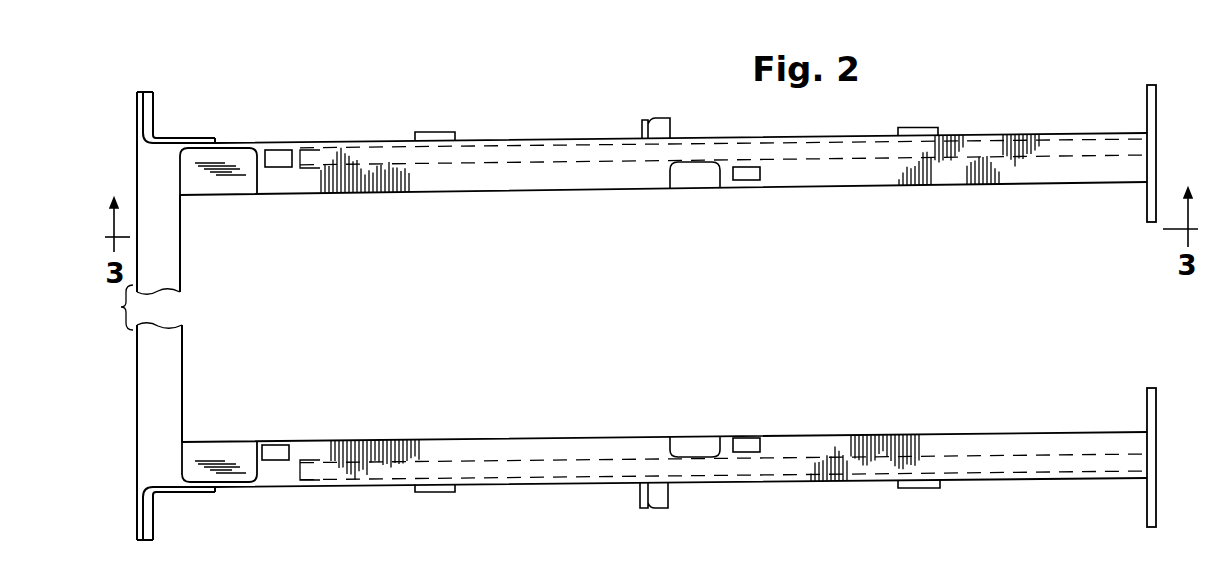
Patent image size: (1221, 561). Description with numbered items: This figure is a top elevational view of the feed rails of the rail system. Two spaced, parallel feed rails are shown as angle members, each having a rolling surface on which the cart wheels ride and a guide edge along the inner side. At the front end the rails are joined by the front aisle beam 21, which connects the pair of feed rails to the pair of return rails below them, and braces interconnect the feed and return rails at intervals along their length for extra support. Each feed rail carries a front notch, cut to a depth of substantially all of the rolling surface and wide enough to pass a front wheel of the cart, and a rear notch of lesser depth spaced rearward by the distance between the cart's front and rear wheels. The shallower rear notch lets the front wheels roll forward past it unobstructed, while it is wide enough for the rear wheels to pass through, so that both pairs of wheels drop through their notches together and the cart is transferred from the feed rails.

The front aisle beam 21 is at (145, 365).